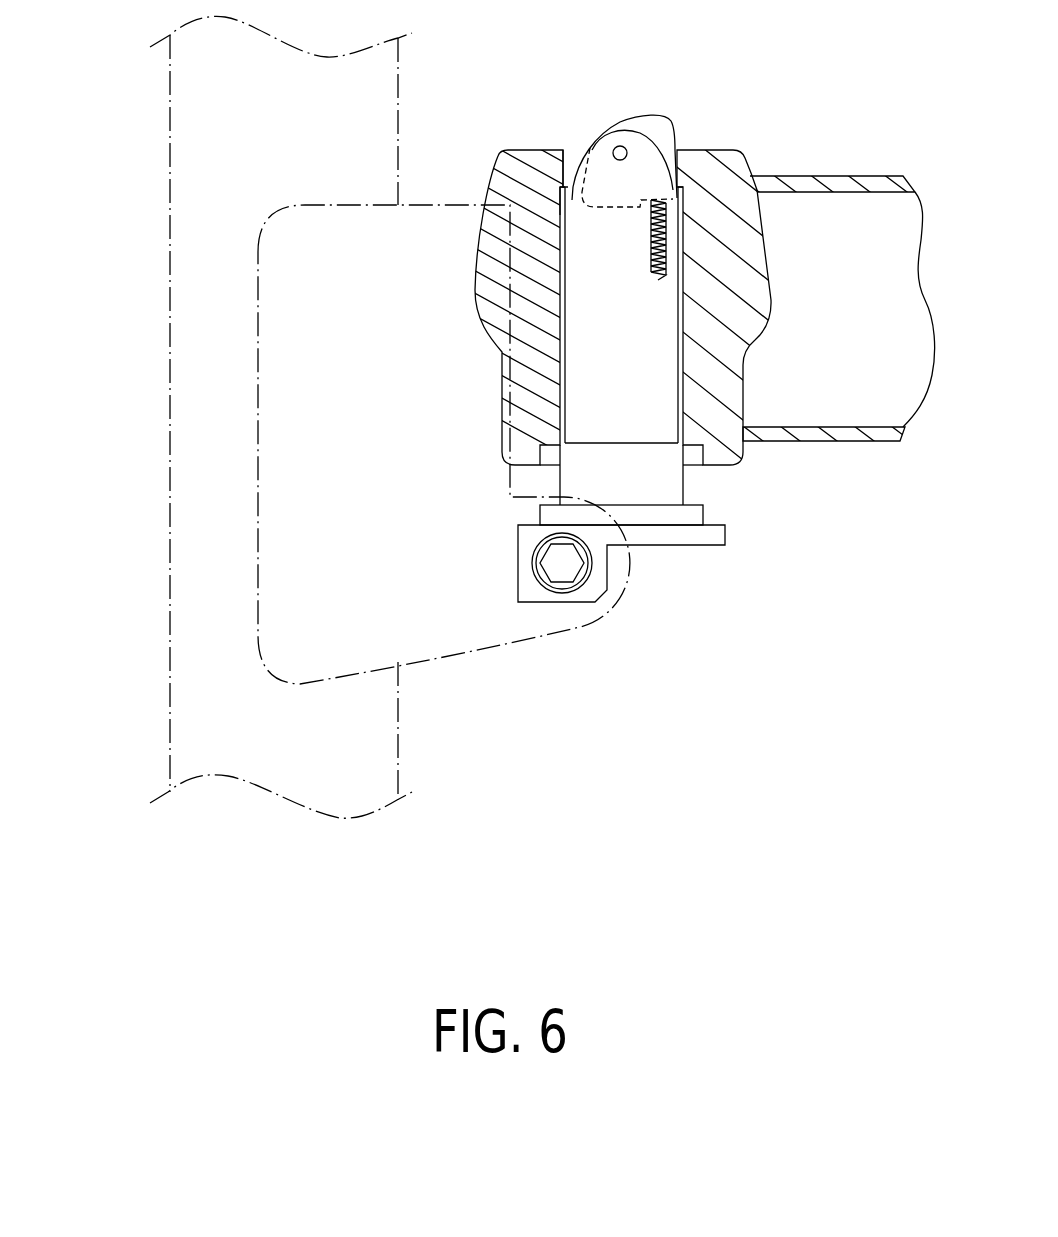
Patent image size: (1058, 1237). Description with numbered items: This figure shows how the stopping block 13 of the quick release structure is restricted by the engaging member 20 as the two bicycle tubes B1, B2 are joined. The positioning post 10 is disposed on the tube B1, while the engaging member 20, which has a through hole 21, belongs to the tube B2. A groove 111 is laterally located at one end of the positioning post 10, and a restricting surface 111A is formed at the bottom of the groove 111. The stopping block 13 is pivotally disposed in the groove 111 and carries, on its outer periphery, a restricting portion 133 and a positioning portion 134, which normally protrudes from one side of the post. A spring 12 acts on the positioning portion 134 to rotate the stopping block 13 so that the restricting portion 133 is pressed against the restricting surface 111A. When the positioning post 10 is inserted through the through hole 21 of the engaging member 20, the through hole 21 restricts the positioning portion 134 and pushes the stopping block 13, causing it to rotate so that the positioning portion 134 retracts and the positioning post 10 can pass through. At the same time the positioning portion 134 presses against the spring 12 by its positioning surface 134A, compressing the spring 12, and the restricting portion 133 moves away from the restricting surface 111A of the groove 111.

The positioning post 10 is at (722, 506).
The spring 12 is at (680, 210).
The stopping block 13 is at (644, 120).
The engaging member 20 is at (733, 146).
The through hole 21 is at (582, 153).
The groove 111 is at (585, 190).
The restricting surface 111A is at (560, 180).
The restricting portion 133 is at (592, 152).
The positioning portion 134 is at (665, 198).
The positioning surface 134A is at (640, 203).
The tube B1 is at (178, 156).
The tube B2 is at (868, 180).